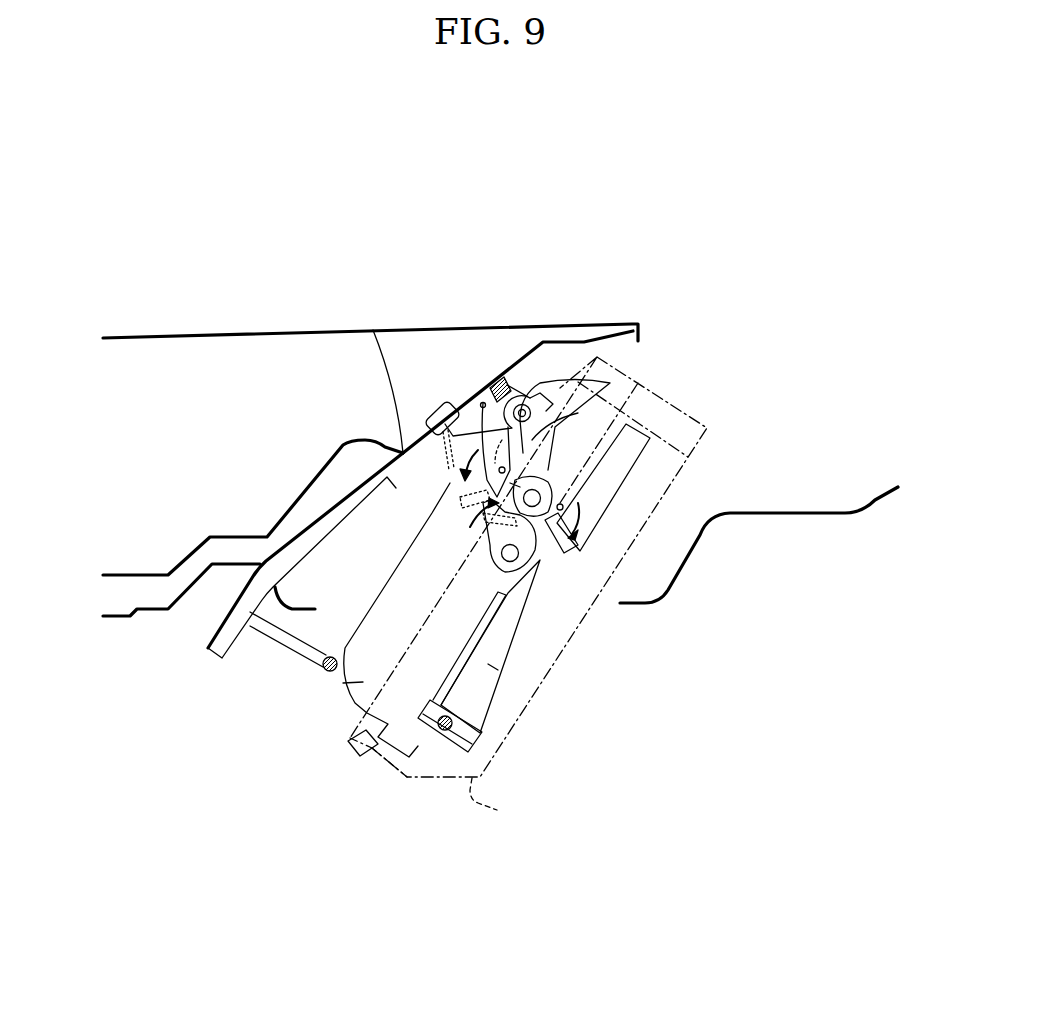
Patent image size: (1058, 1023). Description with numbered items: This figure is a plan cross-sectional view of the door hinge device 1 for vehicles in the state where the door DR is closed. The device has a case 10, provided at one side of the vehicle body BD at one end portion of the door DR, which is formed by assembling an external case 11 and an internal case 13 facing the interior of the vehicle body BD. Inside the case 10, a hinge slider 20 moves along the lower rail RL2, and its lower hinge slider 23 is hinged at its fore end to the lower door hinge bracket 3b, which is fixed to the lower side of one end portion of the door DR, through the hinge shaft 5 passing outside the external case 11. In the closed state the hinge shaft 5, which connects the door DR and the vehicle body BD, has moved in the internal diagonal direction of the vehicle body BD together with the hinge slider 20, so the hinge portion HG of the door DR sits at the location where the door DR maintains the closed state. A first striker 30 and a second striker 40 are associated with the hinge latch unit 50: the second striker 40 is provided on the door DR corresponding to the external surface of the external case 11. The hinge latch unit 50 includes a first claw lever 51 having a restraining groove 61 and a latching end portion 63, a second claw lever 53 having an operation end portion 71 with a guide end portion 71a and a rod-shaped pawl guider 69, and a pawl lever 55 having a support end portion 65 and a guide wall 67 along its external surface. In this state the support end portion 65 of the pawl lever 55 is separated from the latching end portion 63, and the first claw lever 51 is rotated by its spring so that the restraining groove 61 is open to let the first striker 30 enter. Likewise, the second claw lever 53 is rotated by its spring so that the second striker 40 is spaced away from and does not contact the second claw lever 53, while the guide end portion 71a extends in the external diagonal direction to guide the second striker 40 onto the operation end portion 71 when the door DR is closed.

The door DR is at (222, 334).
The vehicle body BD is at (798, 517).
The hinge portion HG is at (518, 375).
The lower rail RL2 is at (488, 664).
The door hinge device 1 is at (775, 382).
The lower door hinge bracket 3b is at (487, 396).
The hinge shaft 5 is at (545, 396).
The case 10 is at (388, 778).
The external case 11 is at (373, 740).
The internal case 13 is at (491, 817).
The hinge slider 20 is at (346, 712).
The lower hinge slider 23 is at (355, 682).
The first striker 30 is at (445, 735).
The second striker 40 is at (307, 657).
The hinge latch unit 50 is at (477, 579).
The first claw lever 51 is at (553, 495).
The second claw lever 53 is at (487, 450).
The pawl lever 55 is at (537, 562).
The restraining groove 61 is at (560, 548).
The latching end portion 63 is at (525, 437).
The support end portion 65 is at (483, 403).
The guide wall 67 is at (492, 550).
The pawl guider 69 is at (480, 518).
The operation end portion 71 is at (497, 473).
The guide end portion 71a is at (373, 330).